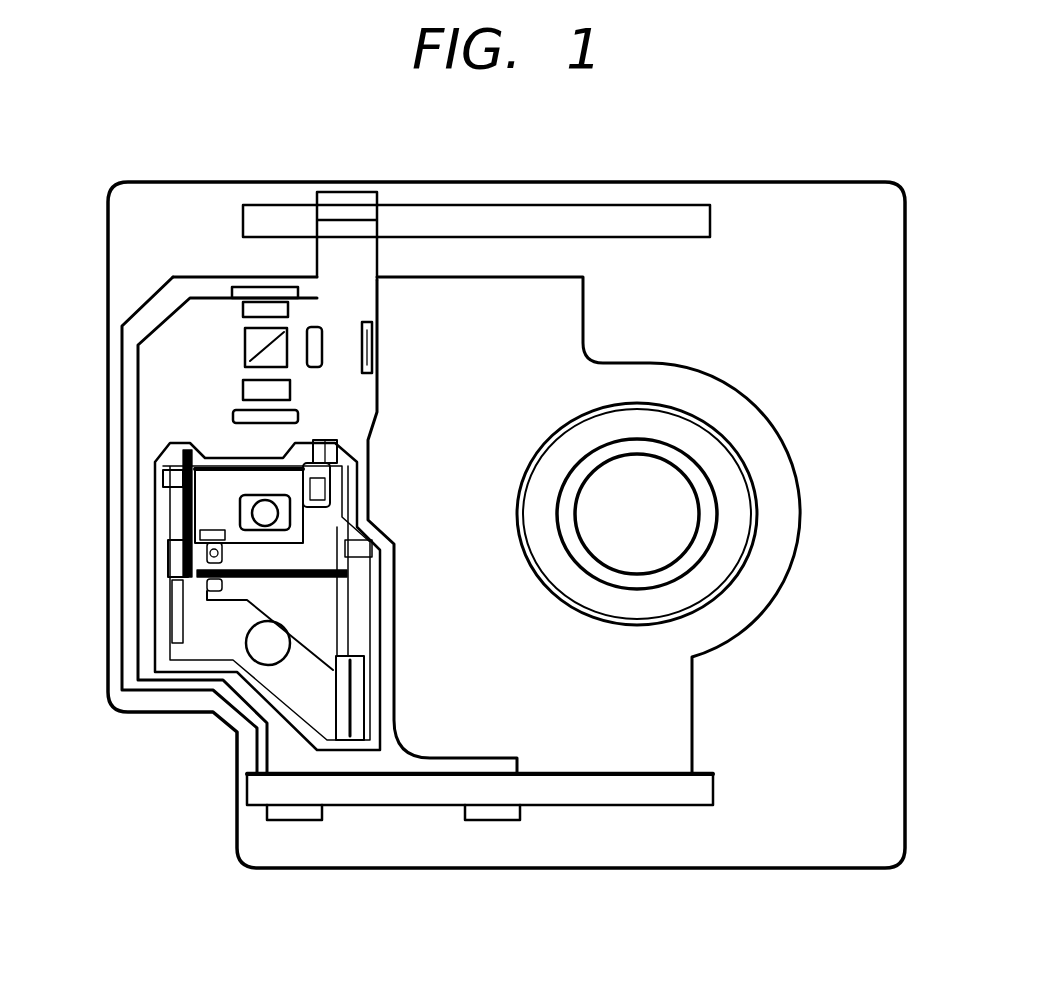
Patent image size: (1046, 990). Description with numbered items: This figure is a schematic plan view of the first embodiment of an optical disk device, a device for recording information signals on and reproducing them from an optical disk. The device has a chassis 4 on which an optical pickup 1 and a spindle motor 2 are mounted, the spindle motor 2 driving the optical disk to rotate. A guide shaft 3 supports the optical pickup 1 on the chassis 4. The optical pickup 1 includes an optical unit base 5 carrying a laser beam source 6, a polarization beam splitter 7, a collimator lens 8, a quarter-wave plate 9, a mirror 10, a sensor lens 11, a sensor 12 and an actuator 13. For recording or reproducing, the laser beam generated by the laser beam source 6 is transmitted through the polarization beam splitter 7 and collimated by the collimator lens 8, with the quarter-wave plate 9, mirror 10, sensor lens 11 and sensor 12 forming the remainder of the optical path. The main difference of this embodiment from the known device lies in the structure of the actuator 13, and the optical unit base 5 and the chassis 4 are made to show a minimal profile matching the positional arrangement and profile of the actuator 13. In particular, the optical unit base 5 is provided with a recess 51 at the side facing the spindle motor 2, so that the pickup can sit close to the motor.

The optical pickup 1 is at (182, 323).
The spindle motor 2 is at (692, 518).
The guide shaft 3 is at (708, 205).
The chassis 4 is at (853, 180).
The optical unit base 5 is at (285, 753).
The laser beam source 6 is at (240, 287).
The polarization beam splitter 7 is at (240, 348).
The collimator lens 8 is at (240, 388).
The quarter-wave plate 9 is at (238, 416).
The mirror 10 is at (240, 499).
The sensor lens 11 is at (320, 325).
The sensor 12 is at (372, 322).
The actuator 13 is at (203, 513).
The recess 51 is at (372, 476).